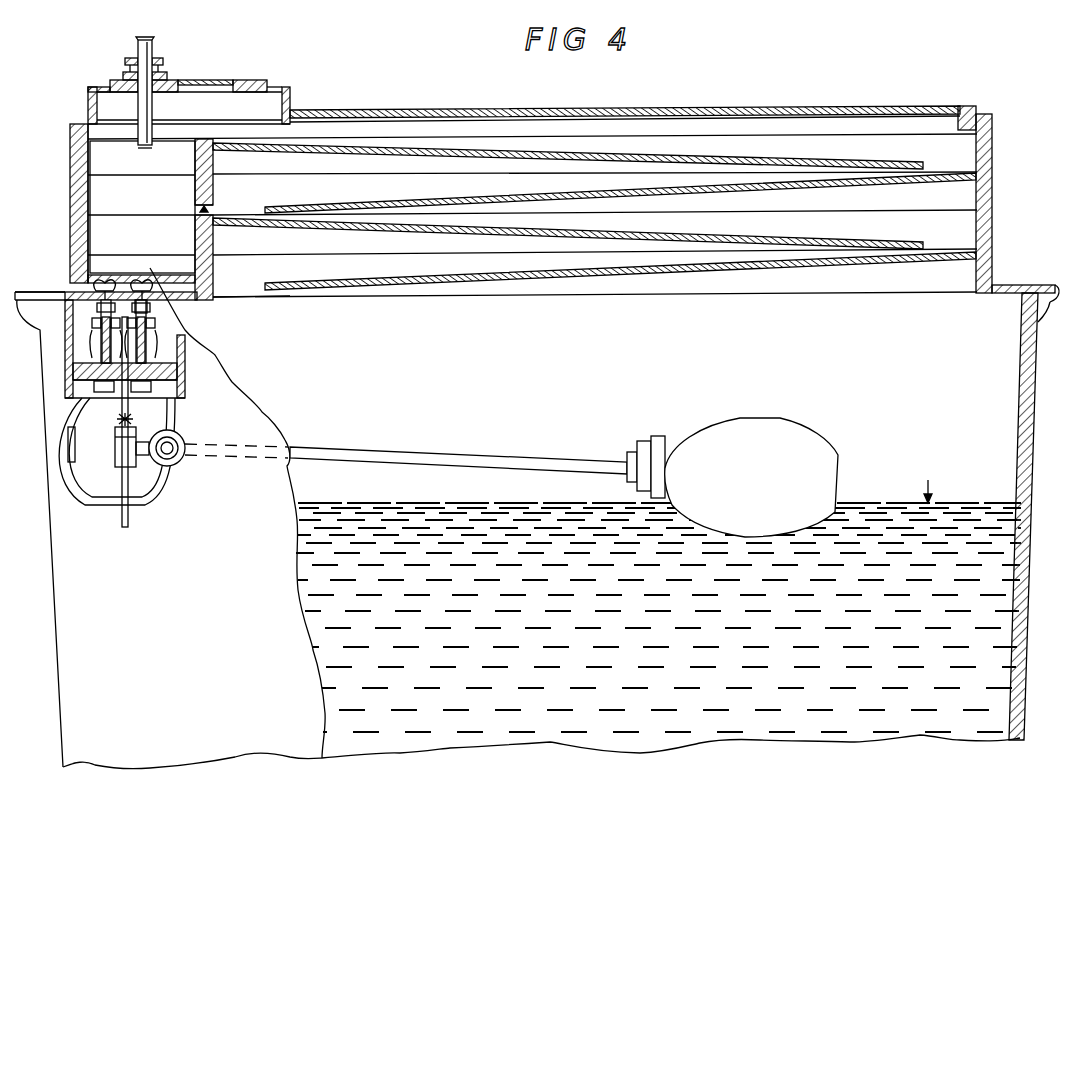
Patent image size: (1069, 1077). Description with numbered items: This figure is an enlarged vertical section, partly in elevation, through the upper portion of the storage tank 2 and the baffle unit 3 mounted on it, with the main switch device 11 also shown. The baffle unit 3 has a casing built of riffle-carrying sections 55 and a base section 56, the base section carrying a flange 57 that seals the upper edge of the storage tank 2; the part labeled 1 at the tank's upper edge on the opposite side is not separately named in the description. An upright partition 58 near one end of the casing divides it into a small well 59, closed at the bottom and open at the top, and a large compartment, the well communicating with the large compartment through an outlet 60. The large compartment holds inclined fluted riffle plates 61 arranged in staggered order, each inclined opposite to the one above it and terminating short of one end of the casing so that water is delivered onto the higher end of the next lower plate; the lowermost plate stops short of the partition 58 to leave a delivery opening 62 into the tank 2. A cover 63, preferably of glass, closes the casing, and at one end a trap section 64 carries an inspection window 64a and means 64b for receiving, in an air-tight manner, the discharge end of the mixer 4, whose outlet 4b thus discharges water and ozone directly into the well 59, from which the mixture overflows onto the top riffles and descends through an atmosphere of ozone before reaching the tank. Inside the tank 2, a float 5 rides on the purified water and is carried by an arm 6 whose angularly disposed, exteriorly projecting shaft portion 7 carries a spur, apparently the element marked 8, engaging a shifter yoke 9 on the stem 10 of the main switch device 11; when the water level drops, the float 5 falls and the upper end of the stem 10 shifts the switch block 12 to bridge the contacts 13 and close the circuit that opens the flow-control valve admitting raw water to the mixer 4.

The tank flange 1 is at (34, 300).
The storage tank 2 is at (518, 518).
The baffle unit 3 is at (523, 178).
The mixer 4 is at (137, 38).
The outlet 4b is at (143, 148).
The float 5 is at (732, 477).
The arm 6 is at (458, 450).
The shaft portion 7 is at (178, 462).
The pin 8 is at (148, 410).
The shifter yoke 9 is at (116, 452).
The stem 10 is at (122, 395).
The main switch device 11 is at (66, 338).
The switch block 12 is at (150, 329).
The contacts 13 is at (76, 353).
The riffle carrying section 55 is at (990, 156).
The base section 56 is at (996, 290).
The flange 57 is at (1016, 295).
The upright partition 58 is at (210, 243).
The well 59 is at (142, 207).
The outlet 60 is at (208, 208).
The riffle plates 61 is at (708, 150).
The delivery opening 62 is at (251, 285).
The cover 63 is at (522, 120).
The trap section 64 is at (288, 92).
The inspection window 64a is at (234, 78).
The means for receiving the discharge end of the mixing device 64b is at (164, 76).